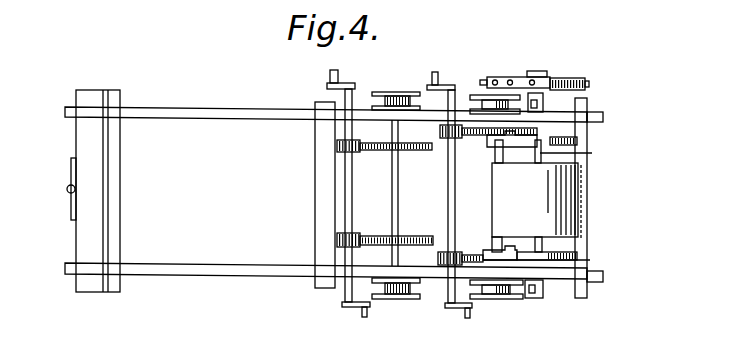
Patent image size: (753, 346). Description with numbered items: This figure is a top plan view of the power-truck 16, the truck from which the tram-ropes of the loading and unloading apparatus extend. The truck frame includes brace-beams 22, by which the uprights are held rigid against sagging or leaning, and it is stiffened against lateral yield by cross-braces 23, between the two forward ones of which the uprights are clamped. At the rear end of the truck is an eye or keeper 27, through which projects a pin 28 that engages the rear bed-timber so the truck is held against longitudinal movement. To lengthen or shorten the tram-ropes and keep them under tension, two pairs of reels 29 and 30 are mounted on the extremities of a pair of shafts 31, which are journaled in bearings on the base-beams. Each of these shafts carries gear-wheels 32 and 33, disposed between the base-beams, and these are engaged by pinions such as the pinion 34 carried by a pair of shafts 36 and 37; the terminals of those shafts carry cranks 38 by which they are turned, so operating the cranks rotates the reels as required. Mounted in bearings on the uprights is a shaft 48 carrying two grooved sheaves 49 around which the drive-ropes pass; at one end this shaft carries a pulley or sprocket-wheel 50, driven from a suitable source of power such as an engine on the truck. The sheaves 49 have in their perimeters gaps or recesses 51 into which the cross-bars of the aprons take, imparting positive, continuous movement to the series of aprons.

The power-truck 16 is at (225, 89).
The brace-beams 22 is at (285, 123).
The cross-braces 23 is at (97, 190).
The eye or keeper 27 is at (66, 188).
The pin 28 is at (68, 195).
The reels 29 is at (477, 94).
The reels 30 is at (404, 93).
The shafts 31 is at (492, 157).
The gear-wheel 32 is at (472, 252).
The gear-wheel 33 is at (428, 240).
The pinion 34 is at (446, 264).
The shaft 36 is at (452, 205).
The shaft 37 is at (351, 203).
The cranks 38 is at (336, 81).
The shaft 48 is at (592, 153).
The grooved sheaves 49 is at (590, 137).
The pulley or sprocket-wheel 50 is at (572, 78).
The gaps or recesses 51 is at (512, 256).